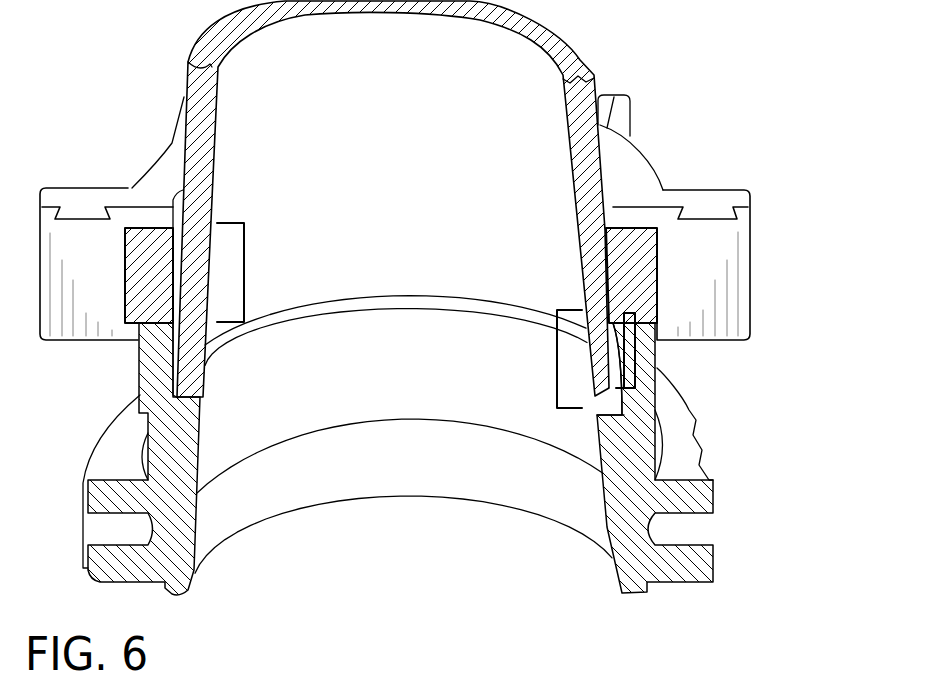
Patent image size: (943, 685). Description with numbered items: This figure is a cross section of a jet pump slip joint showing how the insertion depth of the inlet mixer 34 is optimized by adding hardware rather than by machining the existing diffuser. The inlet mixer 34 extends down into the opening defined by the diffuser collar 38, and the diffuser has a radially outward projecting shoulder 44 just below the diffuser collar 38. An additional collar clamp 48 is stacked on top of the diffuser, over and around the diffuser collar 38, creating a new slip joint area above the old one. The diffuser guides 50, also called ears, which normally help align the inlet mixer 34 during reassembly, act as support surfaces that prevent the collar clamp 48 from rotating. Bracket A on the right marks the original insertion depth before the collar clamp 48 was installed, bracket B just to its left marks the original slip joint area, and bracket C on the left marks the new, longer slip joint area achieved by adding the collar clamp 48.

The inlet mixer 34 is at (573, 95).
The diffuser collar 38 is at (657, 368).
The shoulder 44 is at (712, 497).
The collar clamp 48 is at (640, 167).
The diffuser guides 50 is at (628, 118).
The bracket A is at (640, 350).
The bracket B is at (555, 373).
The bracket C is at (244, 278).